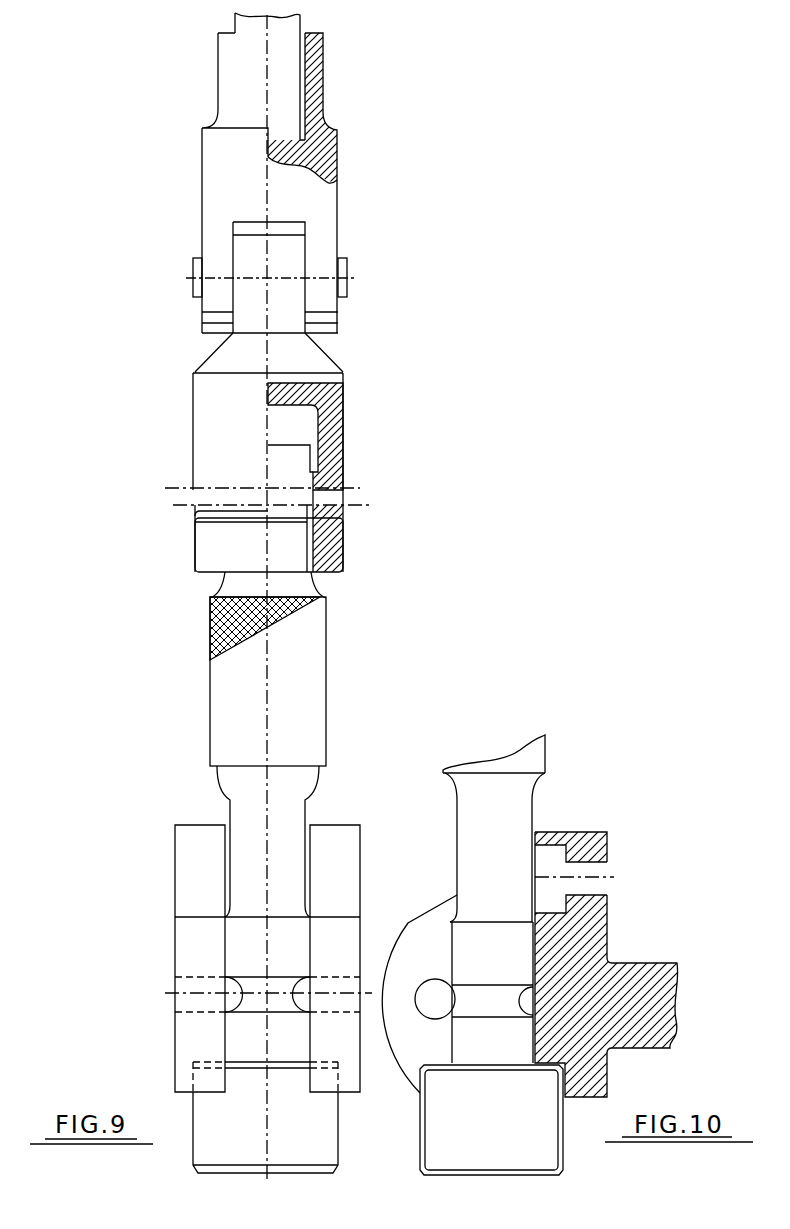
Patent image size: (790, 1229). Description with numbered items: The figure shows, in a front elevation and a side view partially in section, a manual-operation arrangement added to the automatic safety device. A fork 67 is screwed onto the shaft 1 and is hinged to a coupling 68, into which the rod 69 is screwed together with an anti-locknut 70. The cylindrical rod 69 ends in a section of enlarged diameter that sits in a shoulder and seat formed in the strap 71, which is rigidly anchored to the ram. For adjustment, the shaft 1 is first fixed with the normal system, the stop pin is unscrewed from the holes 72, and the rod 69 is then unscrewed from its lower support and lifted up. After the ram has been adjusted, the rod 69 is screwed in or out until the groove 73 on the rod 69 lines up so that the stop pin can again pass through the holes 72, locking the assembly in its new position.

In FIG. 9, the shaft 1 is at (280, 79).
In FIG. 9, the fork 67 is at (322, 218).
In FIG. 9, the coupling 68 is at (330, 409).
In FIG. 9, the rod 69 is at (308, 638).
In FIG. 10, the rod 69 is at (510, 832).
In FIG. 9, the anti-locknut 70 is at (330, 552).
In FIG. 10, the strap 71 is at (587, 936).
In FIG. 9, the holes 72 is at (345, 1003).
In FIG. 10, the holes 72 is at (434, 998).
In FIG. 9, the groove 73 is at (277, 986).
In FIG. 10, the groove 73 is at (482, 998).